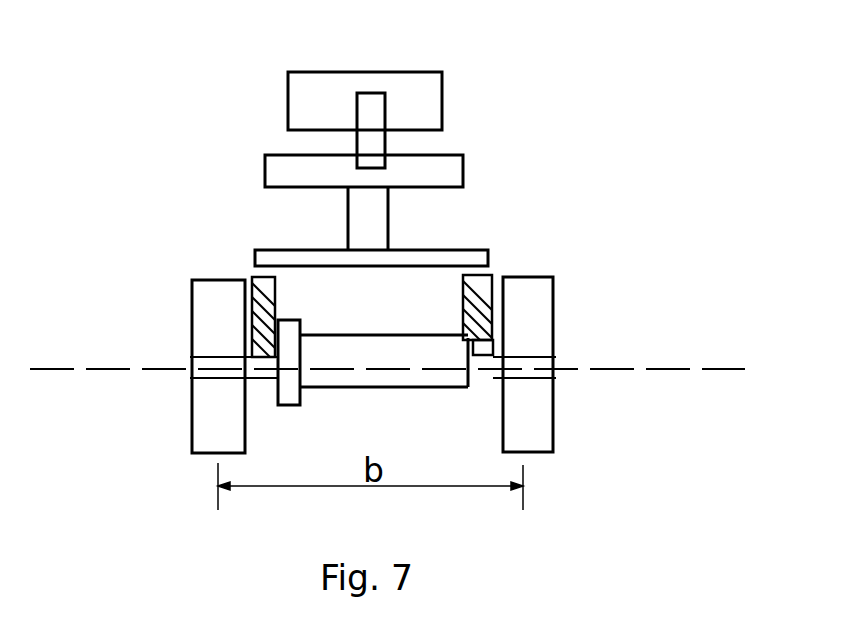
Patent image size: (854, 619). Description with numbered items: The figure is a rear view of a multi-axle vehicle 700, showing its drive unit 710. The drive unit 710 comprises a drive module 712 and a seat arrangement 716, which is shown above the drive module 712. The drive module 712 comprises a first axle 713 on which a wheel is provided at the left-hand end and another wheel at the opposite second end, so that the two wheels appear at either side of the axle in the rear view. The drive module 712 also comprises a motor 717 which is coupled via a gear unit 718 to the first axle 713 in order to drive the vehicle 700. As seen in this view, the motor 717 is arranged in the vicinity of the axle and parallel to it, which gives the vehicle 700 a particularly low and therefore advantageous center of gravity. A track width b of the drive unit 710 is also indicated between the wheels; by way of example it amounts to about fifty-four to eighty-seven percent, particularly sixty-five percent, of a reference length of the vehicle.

The multi-axle vehicle 700 is at (506, 107).
The drive unit 710 is at (259, 218).
The drive module 712 is at (306, 310).
The first axle 713 is at (570, 353).
The seat arrangement 716 is at (476, 159).
The motor 717 is at (458, 384).
The gear unit 718 is at (264, 400).